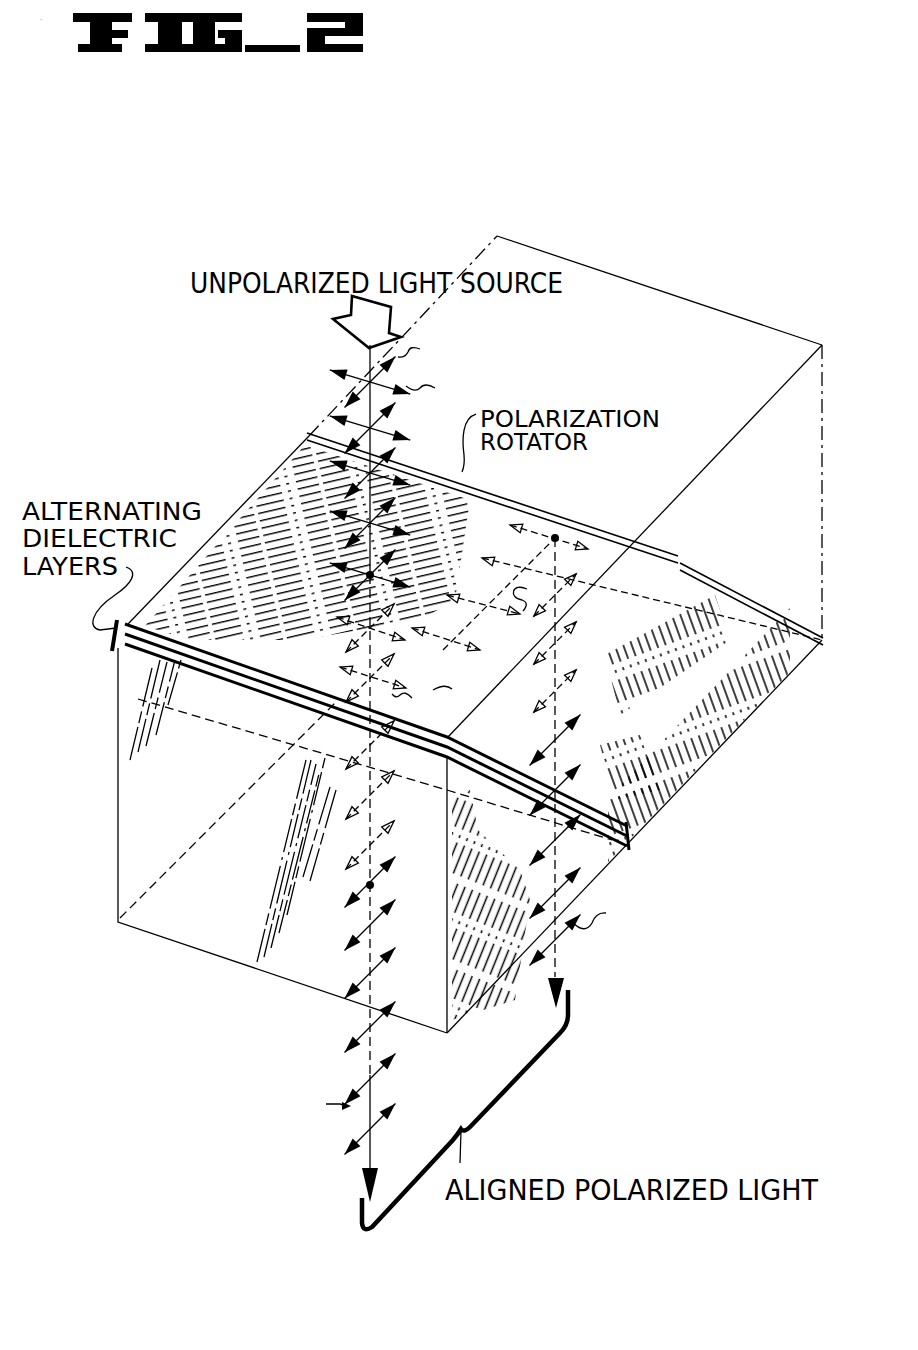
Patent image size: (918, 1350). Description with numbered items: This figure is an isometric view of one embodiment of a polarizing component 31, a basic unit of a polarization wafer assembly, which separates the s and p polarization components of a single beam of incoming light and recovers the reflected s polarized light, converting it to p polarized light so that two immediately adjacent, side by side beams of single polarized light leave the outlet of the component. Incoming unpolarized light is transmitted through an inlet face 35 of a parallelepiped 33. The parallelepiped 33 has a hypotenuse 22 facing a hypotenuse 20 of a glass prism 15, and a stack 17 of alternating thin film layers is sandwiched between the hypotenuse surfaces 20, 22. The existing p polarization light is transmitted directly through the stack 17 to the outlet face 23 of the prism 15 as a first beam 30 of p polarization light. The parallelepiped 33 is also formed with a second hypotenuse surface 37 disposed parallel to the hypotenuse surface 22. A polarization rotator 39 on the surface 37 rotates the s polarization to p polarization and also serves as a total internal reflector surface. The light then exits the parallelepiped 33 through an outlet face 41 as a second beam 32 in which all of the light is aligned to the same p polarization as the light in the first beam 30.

The glass prism 15 is at (110, 820).
The stack of alternating thin film layers 17 is at (627, 845).
The hypotenuse 20 is at (287, 718).
The hypotenuse 22 is at (232, 660).
The outlet face 23 is at (257, 930).
The first beam 30 is at (359, 1183).
The polarizing component 31 is at (146, 393).
The second beam 32 is at (565, 981).
The parallelepiped 33 is at (241, 492).
The inlet face 35 is at (340, 658).
The second hypotenuse surface 37 is at (680, 565).
The polarization rotator 39 is at (577, 520).
The outlet face 41 is at (642, 743).